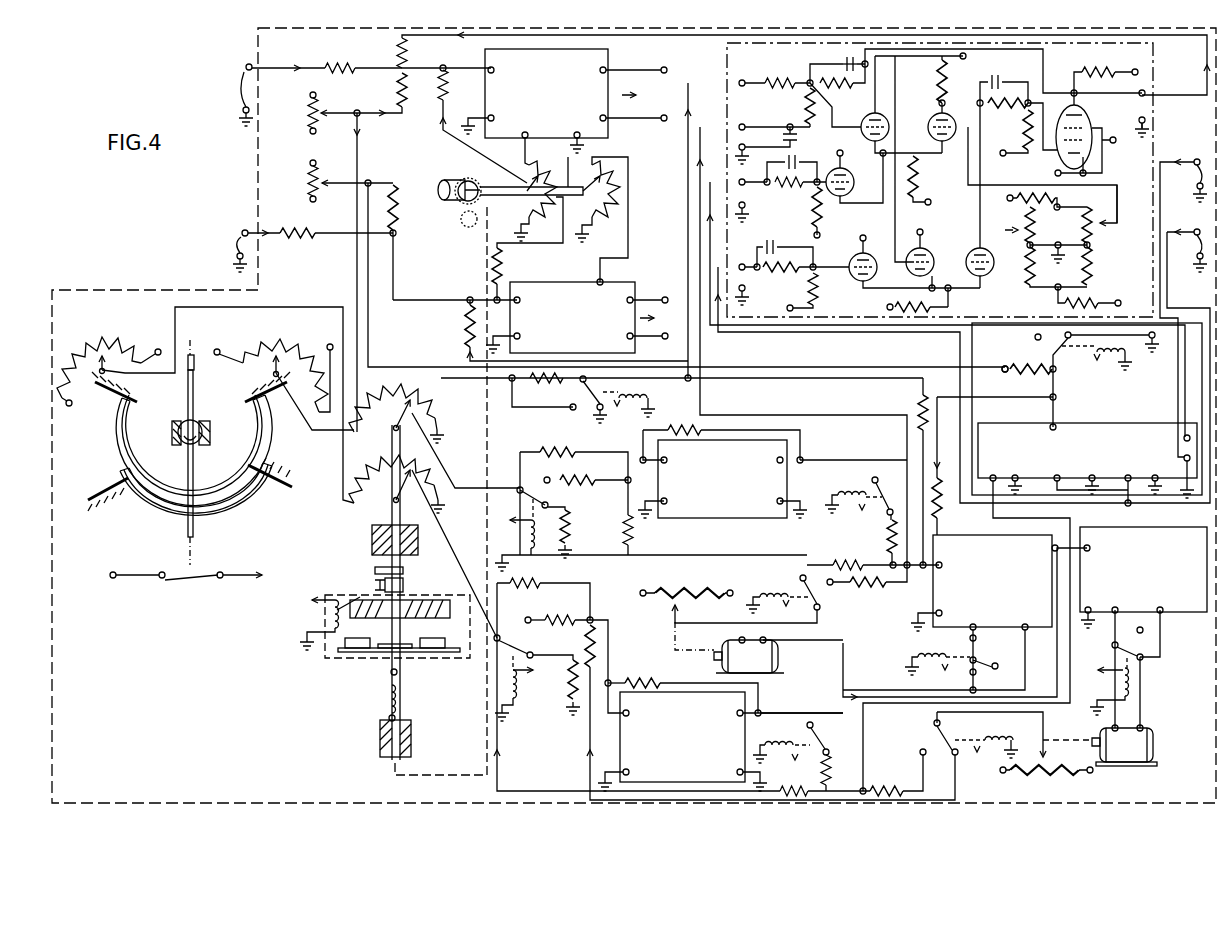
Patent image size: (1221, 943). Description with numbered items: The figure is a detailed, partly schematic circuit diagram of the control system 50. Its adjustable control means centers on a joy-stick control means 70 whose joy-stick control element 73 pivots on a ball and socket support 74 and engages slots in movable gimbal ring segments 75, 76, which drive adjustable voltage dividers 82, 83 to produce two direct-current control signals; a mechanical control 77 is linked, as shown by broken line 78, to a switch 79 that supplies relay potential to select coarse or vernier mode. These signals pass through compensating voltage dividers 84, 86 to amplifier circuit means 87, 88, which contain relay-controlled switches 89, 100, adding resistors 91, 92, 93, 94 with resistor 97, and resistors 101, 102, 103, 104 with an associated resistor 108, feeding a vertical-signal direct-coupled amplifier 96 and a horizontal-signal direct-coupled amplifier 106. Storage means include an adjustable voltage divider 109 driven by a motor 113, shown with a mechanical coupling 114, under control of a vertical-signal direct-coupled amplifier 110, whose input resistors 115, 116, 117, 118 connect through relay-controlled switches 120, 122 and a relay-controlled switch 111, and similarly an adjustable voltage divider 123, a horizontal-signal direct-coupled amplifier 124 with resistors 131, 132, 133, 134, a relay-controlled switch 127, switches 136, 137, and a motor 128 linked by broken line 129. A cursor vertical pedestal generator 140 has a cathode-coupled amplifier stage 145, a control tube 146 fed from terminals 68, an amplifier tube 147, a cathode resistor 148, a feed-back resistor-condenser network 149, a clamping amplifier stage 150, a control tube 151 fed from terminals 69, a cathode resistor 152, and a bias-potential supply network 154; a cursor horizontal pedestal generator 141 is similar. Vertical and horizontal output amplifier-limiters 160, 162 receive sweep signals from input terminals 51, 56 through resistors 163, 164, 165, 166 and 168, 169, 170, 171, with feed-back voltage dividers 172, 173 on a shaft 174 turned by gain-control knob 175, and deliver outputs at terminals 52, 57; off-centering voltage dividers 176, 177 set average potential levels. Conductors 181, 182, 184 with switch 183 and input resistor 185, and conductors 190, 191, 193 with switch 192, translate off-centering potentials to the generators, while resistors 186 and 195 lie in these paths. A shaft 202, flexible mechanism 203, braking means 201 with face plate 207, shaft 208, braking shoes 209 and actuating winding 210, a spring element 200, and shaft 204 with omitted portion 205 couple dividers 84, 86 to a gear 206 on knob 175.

The control system 50 is at (258, 42).
The vertical sweep-signal input terminals 51 is at (239, 80).
The output terminals 52 is at (640, 94).
The horizontal sweep-signal input terminals 56 is at (244, 251).
The output terminals 57 is at (655, 318).
The negative time-sharing gating-pulse input terminals 68 is at (1183, 308).
The positive time-sharing gating pulse input terminals 69 is at (1187, 250).
The joy-stick control means 70 is at (183, 448).
The joy-stick control element 73 is at (193, 400).
The ball and socket support 74 is at (222, 414).
The movable gimbal ring segment 75 is at (255, 440).
The movable gimbal ring segment 76 is at (125, 440).
The mechanical control 77 is at (191, 355).
The broken line 78 is at (194, 563).
The switch 79 is at (170, 584).
The adjustable voltage divider 82 is at (309, 348).
The adjustable voltage divider 83 is at (118, 342).
The adjustable voltage divider 84 is at (428, 406).
The adjustable voltage divider 86 is at (380, 460).
The amplifier circuit means 87 is at (772, 474).
The amplifier circuit means 88 is at (668, 678).
The relay-controlled switch 89 is at (648, 500).
The resistor 91 is at (530, 450).
The resistor 92 is at (567, 463).
The resistor 93 is at (690, 427).
The input resistor 94 is at (625, 515).
The vertical-signal direct-coupled amplifier 96 is at (698, 520).
The resistor 97 is at (566, 540).
The relay-controlled switch 100 is at (537, 660).
The resistor 101 is at (536, 583).
The resistor 102 is at (548, 618).
The resistor 103 is at (634, 671).
The input resistor 104 is at (587, 639).
The horizontal-signal direct-coupled amplifier 106 is at (750, 699).
The resistor 108 is at (573, 676).
The adjustable voltage divider 109 is at (700, 590).
The vertical-signal direct-coupled amplifier 110 is at (950, 614).
The relay-controlled switch 111 is at (1006, 652).
The motor 113 is at (725, 640).
The mechanical coupling 114 is at (672, 645).
The input resistor 115 is at (838, 562).
The input resistor 116 is at (886, 543).
The input resistor 117 is at (918, 411).
The input resistor 118 is at (867, 587).
The relay-controlled switch 120 is at (856, 518).
The relay-controlled switch 122 is at (783, 584).
The adjustable voltage divider 123 is at (1020, 778).
The horizontal-signal direct-coupled amplifier 124 is at (1190, 607).
The relay-controlled switch 127 is at (1176, 682).
The motor 128 is at (1130, 752).
The broken line 129 is at (1083, 735).
The resistor 131 is at (794, 782).
The input resistor 132 is at (841, 770).
The input resistor 133 is at (950, 497).
The input resistor 134 is at (872, 790).
The relay-controlled switch 136 is at (788, 737).
The relay-controlled switch 137 is at (980, 737).
The cursor vertical pedestal generator 140 is at (924, 180).
The cursor horizontal pedestal generator 141 is at (1032, 557).
The cathode-coupled amplifier stage 145 is at (928, 113).
The gating pulse-responsive control tube 146 is at (814, 197).
The amplifier tube 147 is at (1087, 112).
The cathode resistor 148 is at (915, 180).
The feed-back resistor-condenser network 149 is at (814, 65).
The cathode-coupled amplifier stage 150 is at (966, 258).
The gating pulse-responsive control tube 151 is at (849, 264).
The cathode resistor 152 is at (934, 304).
The adjustable bias-potential supply network 154 is at (1066, 233).
The vertical output amplifier-limiter 160 is at (476, 50).
The horizontal output amplifier-limiter 162 is at (556, 283).
The input resistor 163 is at (405, 55).
The resistor 164 is at (396, 90).
The resistor 165 is at (803, 63).
The input resistor 166 is at (466, 99).
The input resistor 168 is at (288, 238).
The resistor 169 is at (394, 230).
The resistor 170 is at (464, 322).
The input resistor 171 is at (527, 250).
The adjustable feed-back voltage divider 172 is at (530, 170).
The adjustable feed-back voltage divider 173 is at (598, 219).
The shaft 174 is at (491, 191).
The amplifier gain-control knob 175 is at (458, 181).
The off-centering voltage divider 176 is at (308, 108).
The off-centering voltage divider 177 is at (308, 183).
The conductor 181 is at (358, 156).
The conductor 182 is at (530, 407).
The relay-controlled switch 183 is at (618, 447).
The conductor 184 is at (648, 382).
The input resistor 185 is at (795, 90).
The resistor 186 is at (565, 385).
The conductor 190 is at (369, 334).
The conductor 191 is at (1003, 365).
The relay-controlled switch 192 is at (1040, 361).
The conductor 193 is at (1056, 403).
The resistor 195 is at (1015, 375).
The spring element 200 is at (383, 705).
The braking means 201 is at (364, 572).
The shaft 202 is at (392, 519).
The flexible mechanism 203 is at (404, 572).
The shaft 204 is at (390, 757).
The broken line 205 is at (465, 775).
The gear 206 is at (462, 222).
The face plate 207 is at (377, 636).
The shaft 208 is at (398, 667).
The braking shoes 209 is at (397, 638).
The actuating winding 210 is at (333, 580).